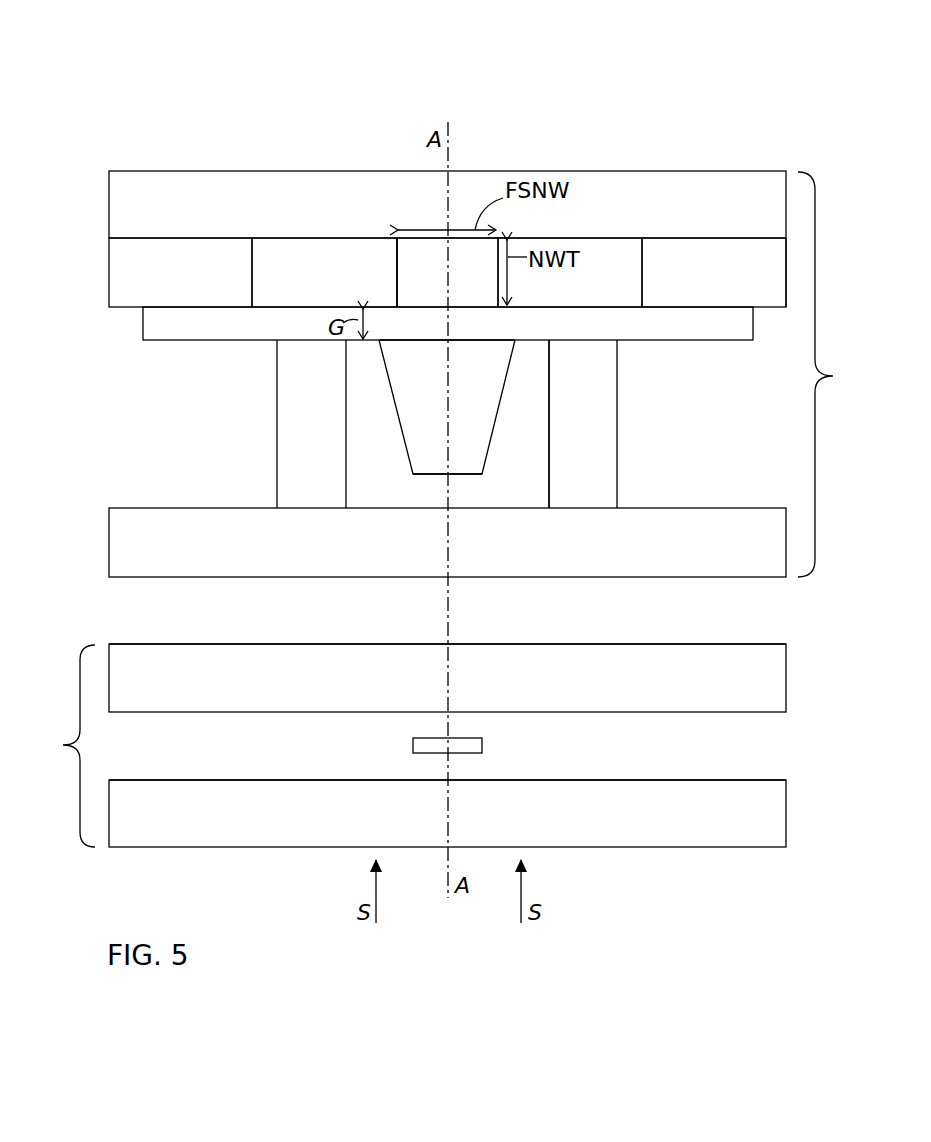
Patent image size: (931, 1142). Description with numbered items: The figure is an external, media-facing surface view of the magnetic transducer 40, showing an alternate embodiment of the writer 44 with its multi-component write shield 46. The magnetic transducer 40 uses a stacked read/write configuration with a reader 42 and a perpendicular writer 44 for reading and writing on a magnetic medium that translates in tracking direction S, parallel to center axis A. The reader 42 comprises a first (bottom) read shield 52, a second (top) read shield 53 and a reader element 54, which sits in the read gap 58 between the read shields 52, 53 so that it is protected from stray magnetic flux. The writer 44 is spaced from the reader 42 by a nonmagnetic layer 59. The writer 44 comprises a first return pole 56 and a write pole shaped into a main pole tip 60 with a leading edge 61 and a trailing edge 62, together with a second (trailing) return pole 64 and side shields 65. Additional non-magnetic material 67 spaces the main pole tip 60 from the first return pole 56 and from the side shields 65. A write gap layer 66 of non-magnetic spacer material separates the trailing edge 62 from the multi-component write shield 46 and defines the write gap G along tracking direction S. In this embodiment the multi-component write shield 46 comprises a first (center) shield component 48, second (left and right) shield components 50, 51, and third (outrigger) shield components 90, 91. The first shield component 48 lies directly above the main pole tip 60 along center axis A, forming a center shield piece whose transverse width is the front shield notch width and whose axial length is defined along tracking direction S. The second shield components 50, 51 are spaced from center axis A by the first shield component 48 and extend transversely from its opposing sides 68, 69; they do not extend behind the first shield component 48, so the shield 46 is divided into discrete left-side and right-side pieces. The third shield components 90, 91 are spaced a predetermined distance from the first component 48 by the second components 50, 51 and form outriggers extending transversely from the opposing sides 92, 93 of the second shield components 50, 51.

The magnetic transducer 40 is at (115, 65).
The reader 42 is at (63, 746).
The perpendicular writer 44 is at (834, 374).
The multi-component write shield 46 is at (97, 238).
The first shield component 48 is at (408, 255).
The second shield component 50 is at (357, 272).
The second shield component 51 is at (600, 272).
The first read shield 52 is at (730, 833).
The second read shield 53 is at (167, 655).
The reader element 54 is at (417, 743).
The first return pole 56 is at (165, 520).
The read gap 58 is at (767, 747).
The nonmagnetic layer 59 is at (767, 613).
The main pole tip 60 is at (417, 445).
The leading edge 61 is at (462, 472).
The trailing edge 62 is at (488, 342).
The second return pole 64 is at (162, 182).
The side shields 65 is at (289, 420).
The write gap layer 66 is at (200, 341).
The non-magnetic material 67 is at (528, 424).
The opposing side 68 is at (400, 284).
The opposing side 69 is at (496, 276).
The third shield component 90 is at (209, 272).
The third shield component 91 is at (743, 272).
The opposing side 92 is at (255, 272).
The opposing side 93 is at (640, 276).